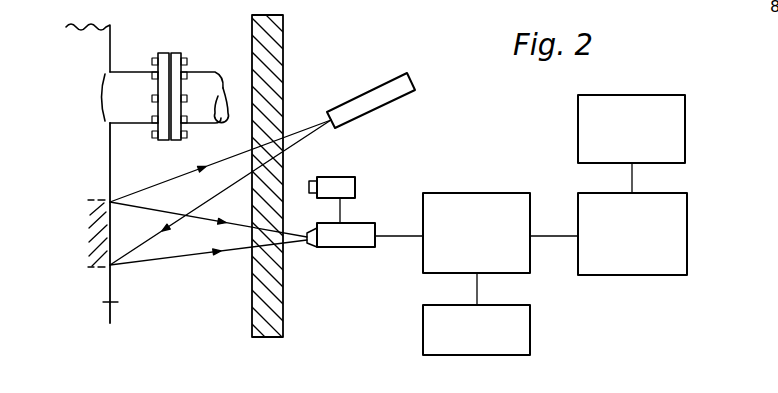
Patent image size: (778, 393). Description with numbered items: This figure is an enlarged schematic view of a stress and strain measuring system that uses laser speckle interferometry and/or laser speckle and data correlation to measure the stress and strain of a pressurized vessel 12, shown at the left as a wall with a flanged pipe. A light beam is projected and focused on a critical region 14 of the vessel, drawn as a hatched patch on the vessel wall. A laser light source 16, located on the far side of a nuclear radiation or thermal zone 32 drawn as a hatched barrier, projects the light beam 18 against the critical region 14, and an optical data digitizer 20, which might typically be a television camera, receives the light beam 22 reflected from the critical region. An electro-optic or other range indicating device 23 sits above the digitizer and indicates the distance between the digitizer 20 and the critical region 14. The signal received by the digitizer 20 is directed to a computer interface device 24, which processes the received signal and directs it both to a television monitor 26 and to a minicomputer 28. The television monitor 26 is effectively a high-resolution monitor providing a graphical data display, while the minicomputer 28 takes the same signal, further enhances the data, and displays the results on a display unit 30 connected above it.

The pressurized vessel 12 is at (112, 303).
The critical region 14 is at (93, 200).
The laser light source 16 is at (385, 100).
The light beam 18 is at (165, 182).
The optical data digitizer 20 is at (345, 238).
The reflected light beam 22 is at (173, 257).
The range indicating device 23 is at (335, 185).
The computer interface device 24 is at (513, 202).
The television monitor 26 is at (512, 347).
The minicomputer 28 is at (652, 268).
The display unit 30 is at (677, 138).
The nuclear radiation or thermal zone 32 is at (263, 338).